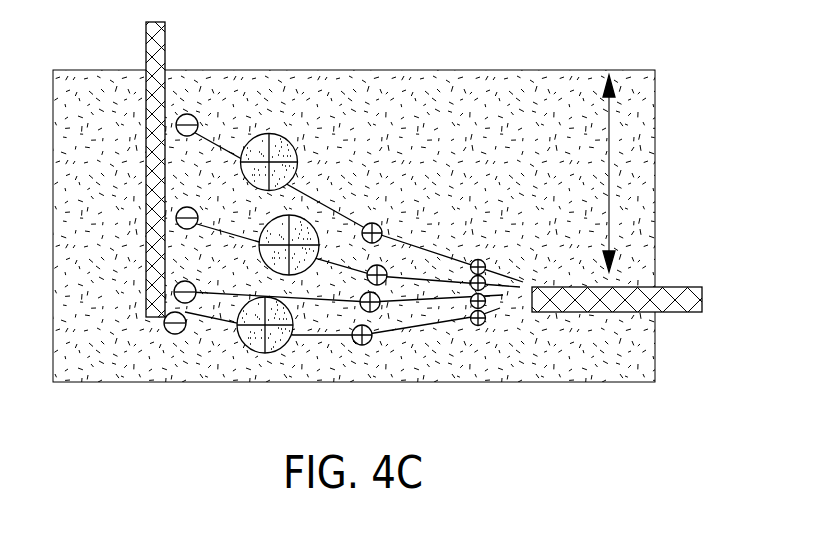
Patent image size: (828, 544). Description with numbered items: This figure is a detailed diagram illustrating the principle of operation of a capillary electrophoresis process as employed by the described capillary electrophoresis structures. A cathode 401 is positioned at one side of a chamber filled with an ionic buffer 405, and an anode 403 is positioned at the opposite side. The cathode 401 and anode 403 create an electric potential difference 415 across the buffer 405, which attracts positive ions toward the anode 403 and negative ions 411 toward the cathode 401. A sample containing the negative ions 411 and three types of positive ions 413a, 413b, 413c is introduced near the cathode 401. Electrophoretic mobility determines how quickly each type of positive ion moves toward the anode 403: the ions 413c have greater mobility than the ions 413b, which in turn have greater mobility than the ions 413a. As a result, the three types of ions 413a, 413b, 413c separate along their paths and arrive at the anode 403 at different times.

The cathode 401 is at (150, 318).
The anode 403 is at (670, 300).
The ionic buffer 405 is at (566, 78).
The negative ions 411 is at (170, 334).
The positive ions 413a is at (258, 134).
The positive ions 413b is at (366, 224).
The positive ions 413c is at (476, 260).
The electric potential difference 415 is at (609, 158).